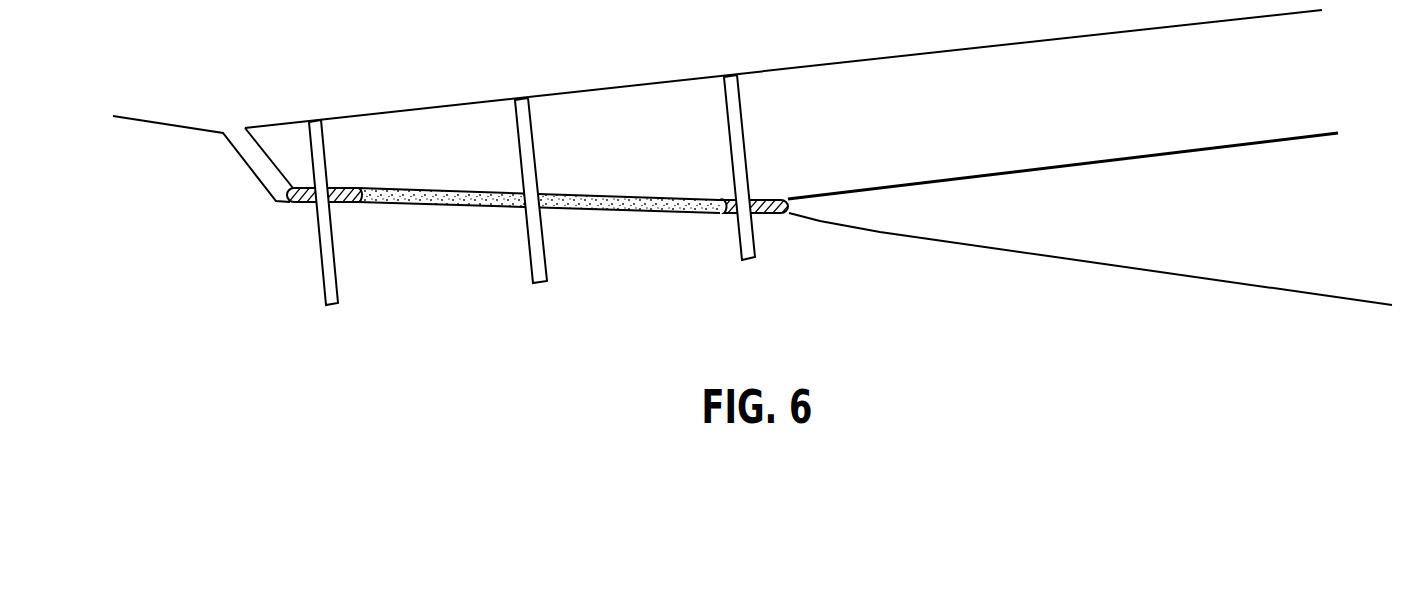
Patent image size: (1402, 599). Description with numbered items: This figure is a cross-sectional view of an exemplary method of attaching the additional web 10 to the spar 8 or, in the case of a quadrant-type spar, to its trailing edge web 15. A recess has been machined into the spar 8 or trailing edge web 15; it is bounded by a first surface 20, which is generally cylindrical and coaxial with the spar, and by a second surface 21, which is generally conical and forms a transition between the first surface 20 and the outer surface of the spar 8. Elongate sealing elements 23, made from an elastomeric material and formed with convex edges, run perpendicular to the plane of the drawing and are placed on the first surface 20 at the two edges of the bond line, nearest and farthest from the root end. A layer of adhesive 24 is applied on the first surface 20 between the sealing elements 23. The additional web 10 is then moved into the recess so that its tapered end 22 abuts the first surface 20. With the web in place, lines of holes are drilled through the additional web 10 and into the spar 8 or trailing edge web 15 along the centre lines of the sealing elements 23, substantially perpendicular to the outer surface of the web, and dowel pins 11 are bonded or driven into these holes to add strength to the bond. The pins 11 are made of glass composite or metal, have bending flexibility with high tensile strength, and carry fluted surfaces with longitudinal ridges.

The spar 8 is at (1090, 259).
The additional web 10 is at (945, 52).
The dowel pins 11 is at (313, 118).
The trailing edge web 15 is at (1199, 276).
The first surface 20 is at (539, 199).
The second surface 21 is at (241, 166).
The tapered end 22 is at (440, 187).
The elongate sealing elements 23 is at (299, 204).
The layer of adhesive 24 is at (600, 210).